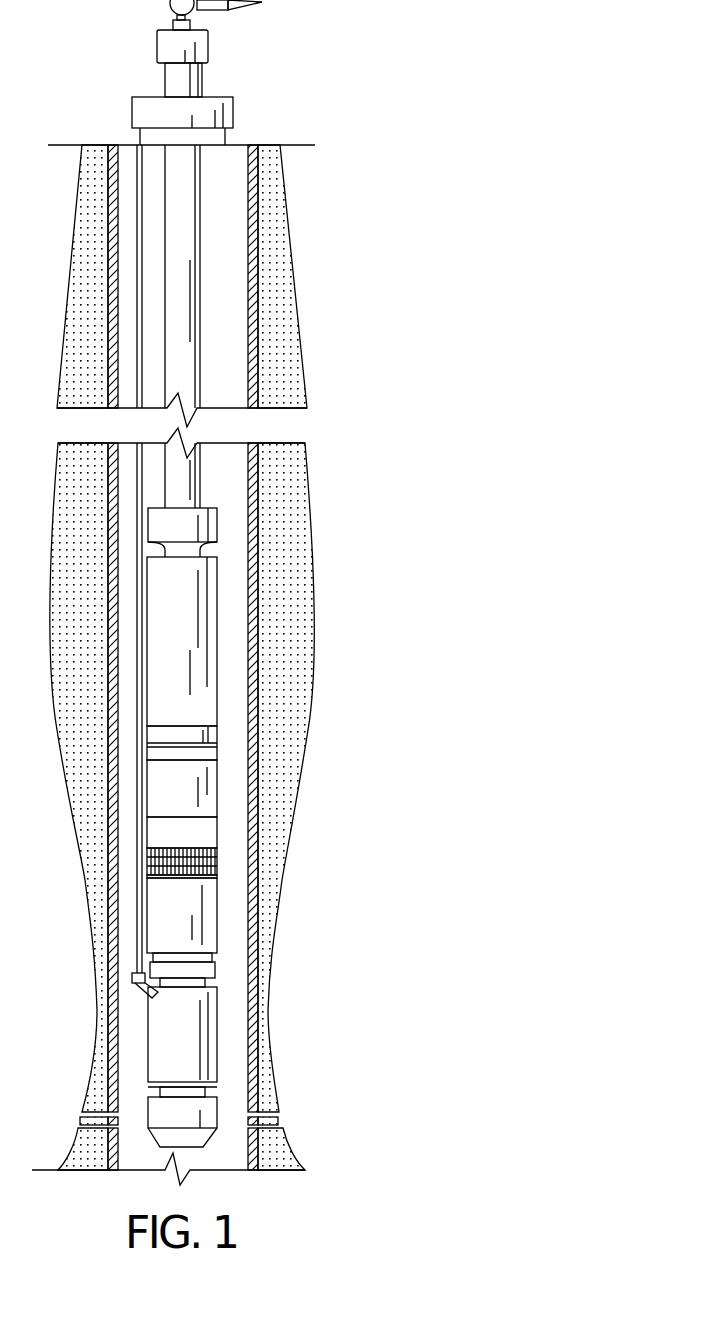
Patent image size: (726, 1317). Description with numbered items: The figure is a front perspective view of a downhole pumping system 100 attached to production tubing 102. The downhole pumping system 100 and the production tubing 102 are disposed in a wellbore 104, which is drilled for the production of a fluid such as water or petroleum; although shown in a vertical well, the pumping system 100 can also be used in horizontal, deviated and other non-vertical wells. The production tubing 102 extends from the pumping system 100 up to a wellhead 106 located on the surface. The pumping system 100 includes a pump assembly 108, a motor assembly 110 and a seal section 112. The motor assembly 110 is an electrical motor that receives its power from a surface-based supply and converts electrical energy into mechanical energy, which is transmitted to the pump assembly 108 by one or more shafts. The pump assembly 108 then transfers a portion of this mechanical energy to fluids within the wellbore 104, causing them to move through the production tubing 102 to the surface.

The downhole pumping system 100 is at (275, 830).
The production tubing 102 is at (192, 187).
The wellbore 104 is at (257, 245).
The wellhead 106 is at (172, 45).
The pump assembly 108 is at (217, 757).
The motor assembly 110 is at (210, 1047).
The seal section 112 is at (217, 893).